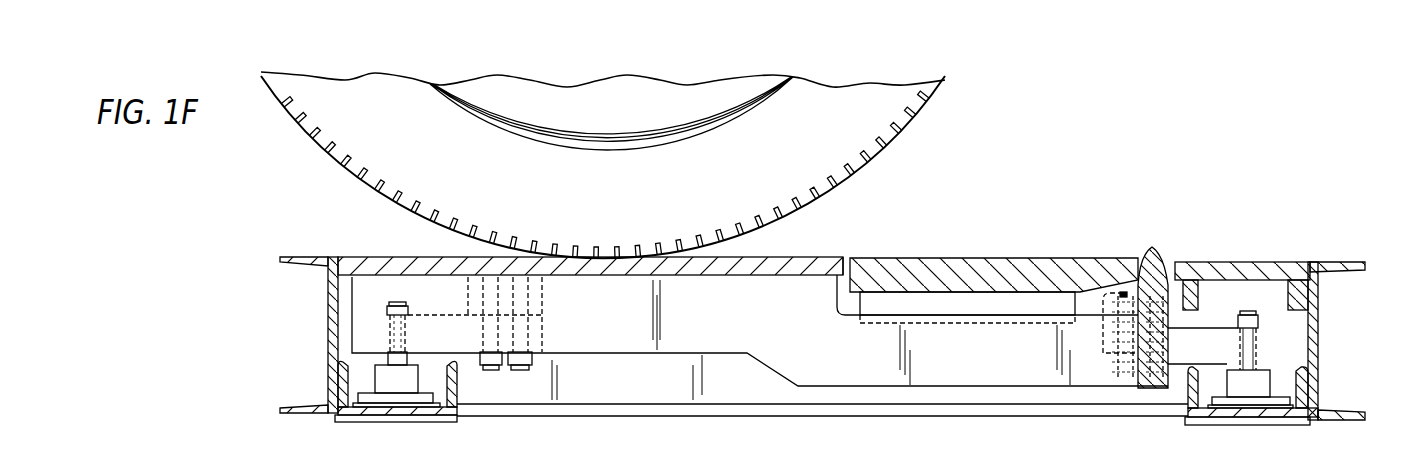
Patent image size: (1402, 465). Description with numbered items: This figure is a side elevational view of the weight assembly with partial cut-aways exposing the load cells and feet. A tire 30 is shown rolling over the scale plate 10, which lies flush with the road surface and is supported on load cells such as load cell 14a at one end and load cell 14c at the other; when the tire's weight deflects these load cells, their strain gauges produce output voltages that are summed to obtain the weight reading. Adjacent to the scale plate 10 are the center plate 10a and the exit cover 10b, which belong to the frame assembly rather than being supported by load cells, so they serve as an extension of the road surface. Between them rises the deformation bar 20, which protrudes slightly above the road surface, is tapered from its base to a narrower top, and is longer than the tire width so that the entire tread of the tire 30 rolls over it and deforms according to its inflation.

The tire 30 is at (842, 126).
The scale plate 10 is at (603, 264).
The center plate 10a is at (937, 277).
The exit cover 10b is at (1277, 270).
The deformation bar 20 is at (1156, 247).
The load cell 14a is at (388, 378).
The load cell 14c is at (1257, 385).